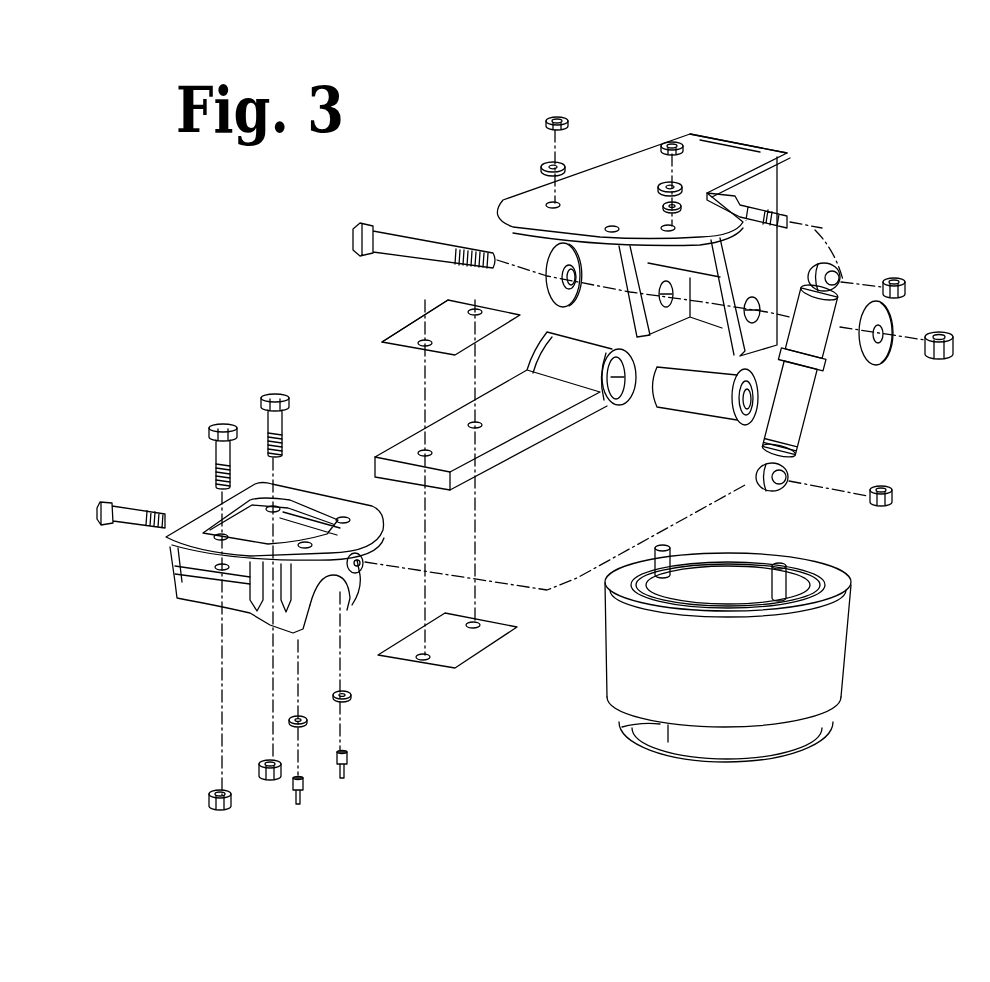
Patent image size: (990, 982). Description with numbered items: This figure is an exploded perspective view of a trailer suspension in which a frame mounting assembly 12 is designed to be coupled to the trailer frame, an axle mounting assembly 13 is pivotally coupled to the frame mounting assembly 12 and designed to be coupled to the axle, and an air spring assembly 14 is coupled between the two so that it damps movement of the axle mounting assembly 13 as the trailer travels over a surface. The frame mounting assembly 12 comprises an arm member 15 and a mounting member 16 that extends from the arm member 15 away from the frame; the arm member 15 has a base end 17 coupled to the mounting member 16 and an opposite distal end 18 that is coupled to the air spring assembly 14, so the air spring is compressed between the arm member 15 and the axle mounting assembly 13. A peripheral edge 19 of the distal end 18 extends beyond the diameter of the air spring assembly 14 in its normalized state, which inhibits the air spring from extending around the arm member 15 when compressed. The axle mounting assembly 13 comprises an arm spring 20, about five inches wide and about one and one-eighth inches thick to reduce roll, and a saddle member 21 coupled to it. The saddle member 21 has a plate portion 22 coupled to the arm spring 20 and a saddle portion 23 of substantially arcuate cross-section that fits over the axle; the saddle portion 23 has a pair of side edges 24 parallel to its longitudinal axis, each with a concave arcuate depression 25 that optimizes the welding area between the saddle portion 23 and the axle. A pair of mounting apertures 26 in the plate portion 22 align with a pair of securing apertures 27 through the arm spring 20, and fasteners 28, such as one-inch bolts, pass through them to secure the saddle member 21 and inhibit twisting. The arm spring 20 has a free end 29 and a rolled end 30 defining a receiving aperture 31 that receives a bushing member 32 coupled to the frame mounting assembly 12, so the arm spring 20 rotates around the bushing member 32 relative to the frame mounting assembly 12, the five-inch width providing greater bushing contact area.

The frame mounting assembly 12 is at (772, 124).
The axle mounting assembly 13 is at (370, 308).
The air spring assembly 14 is at (862, 672).
The arm member 15 is at (642, 160).
The mounting member 16 is at (763, 255).
The base end 17 is at (712, 148).
The distal end 18 is at (545, 237).
The peripheral edge 19 is at (515, 193).
The arm spring 20 is at (490, 450).
The saddle member 21 is at (320, 490).
The plate portion 22 is at (363, 527).
The saddle portion 23 is at (205, 598).
The side edges 24 is at (240, 612).
The concave arcuate depression 25 is at (215, 612).
The mounting apertures 26 is at (276, 504).
The securing apertures 27 is at (425, 453).
The fasteners 28 is at (276, 398).
The free end 29 is at (430, 473).
The rolled end 30 is at (618, 404).
The receiving aperture 31 is at (708, 400).
The bushing member 32 is at (840, 380).